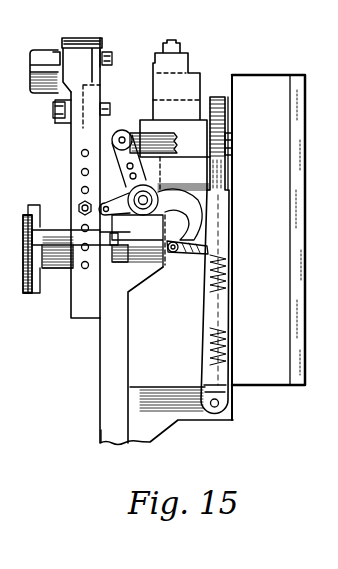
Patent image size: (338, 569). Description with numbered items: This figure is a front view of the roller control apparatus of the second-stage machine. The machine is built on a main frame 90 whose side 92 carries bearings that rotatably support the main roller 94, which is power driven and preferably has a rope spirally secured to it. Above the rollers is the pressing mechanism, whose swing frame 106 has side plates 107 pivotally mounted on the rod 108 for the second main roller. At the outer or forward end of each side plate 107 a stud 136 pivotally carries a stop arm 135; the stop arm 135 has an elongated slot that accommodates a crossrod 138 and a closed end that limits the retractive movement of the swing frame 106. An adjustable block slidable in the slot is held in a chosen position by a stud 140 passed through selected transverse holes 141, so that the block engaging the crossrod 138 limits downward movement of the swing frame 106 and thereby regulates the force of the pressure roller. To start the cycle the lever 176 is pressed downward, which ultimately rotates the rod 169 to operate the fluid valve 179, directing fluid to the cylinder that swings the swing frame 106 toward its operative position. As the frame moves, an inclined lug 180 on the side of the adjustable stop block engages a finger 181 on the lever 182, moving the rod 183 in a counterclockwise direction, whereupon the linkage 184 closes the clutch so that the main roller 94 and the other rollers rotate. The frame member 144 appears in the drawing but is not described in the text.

The main frame 90 is at (95, 379).
The side 92 is at (110, 403).
The main roller 94 is at (27, 297).
The swing frame 106 is at (46, 50).
The side plate 107 is at (90, 78).
The rod 108 is at (143, 265).
The stop arm 135 is at (87, 305).
The stud 136 is at (108, 50).
The crossrod 138 is at (60, 235).
The stud 140 is at (79, 207).
The transverse hole 141 is at (80, 172).
The frame member 144 is at (273, 380).
The rod 169 is at (231, 132).
The lever 176 is at (217, 97).
The fluid valve 179 is at (152, 77).
The inclined lug 180 is at (108, 203).
The finger 181 is at (72, 217).
The lever 182 is at (124, 214).
The rod 183 is at (152, 193).
The linkage 184 is at (125, 136).